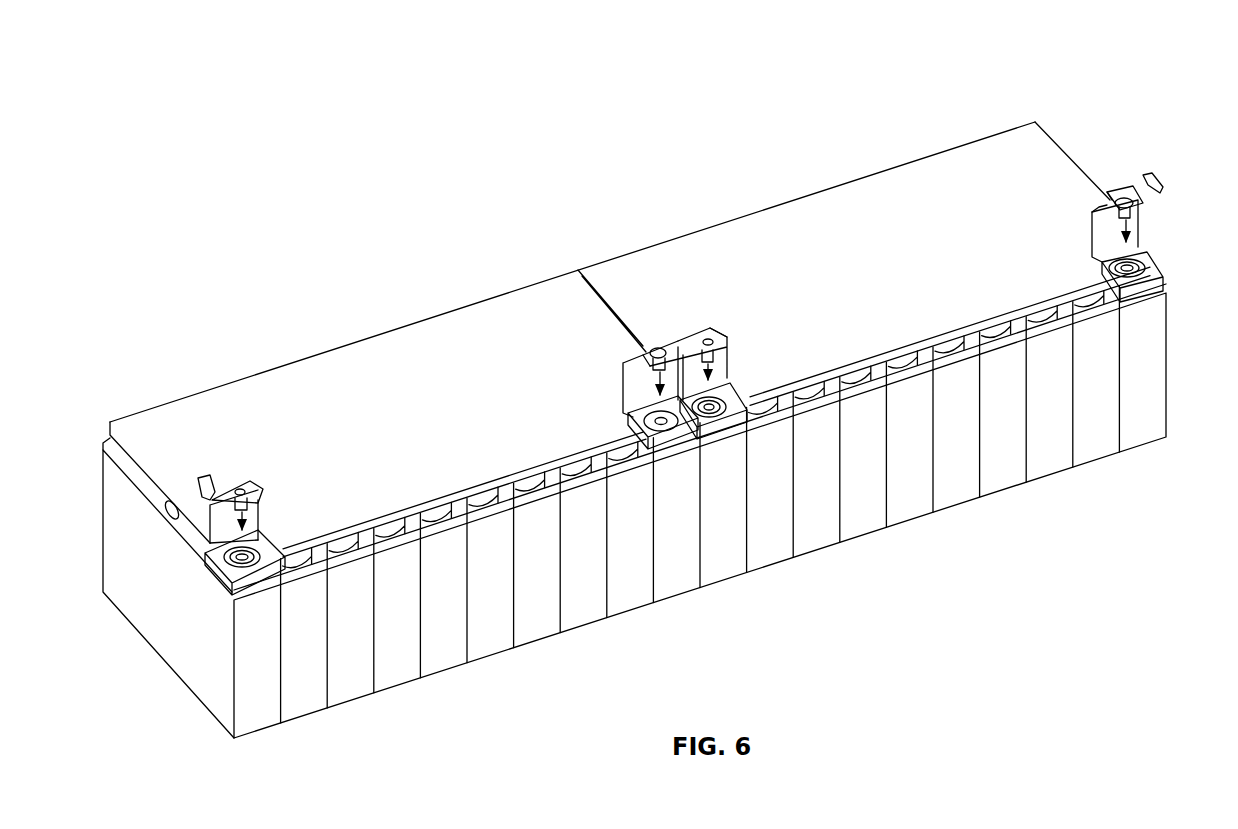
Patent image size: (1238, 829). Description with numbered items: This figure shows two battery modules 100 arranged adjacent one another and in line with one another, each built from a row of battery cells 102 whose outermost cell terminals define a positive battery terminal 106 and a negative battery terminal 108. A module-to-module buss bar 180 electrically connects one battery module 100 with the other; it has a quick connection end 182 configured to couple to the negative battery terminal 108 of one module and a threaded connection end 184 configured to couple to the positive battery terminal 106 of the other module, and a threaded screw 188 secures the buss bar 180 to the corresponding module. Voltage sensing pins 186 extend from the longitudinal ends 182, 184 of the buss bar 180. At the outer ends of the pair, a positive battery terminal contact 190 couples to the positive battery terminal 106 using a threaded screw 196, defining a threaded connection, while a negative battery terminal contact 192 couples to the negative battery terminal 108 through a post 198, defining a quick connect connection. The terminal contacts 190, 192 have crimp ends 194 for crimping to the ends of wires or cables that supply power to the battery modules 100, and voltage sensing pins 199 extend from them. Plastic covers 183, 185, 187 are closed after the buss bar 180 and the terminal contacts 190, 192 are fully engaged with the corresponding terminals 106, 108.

The battery module 100 is at (330, 312).
The battery cell 102 is at (580, 607).
The positive battery terminal 106 is at (1150, 268).
The negative battery terminal 108 is at (233, 545).
The module-to-module buss bar 180 is at (688, 345).
The quick connection end 182 is at (715, 322).
The plastic cover 183 is at (1098, 240).
The threaded connection end 184 is at (628, 355).
The plastic cover 185 is at (640, 390).
The voltage sensing pin 186 is at (728, 335).
The plastic cover 187 is at (220, 523).
The threaded screw 188 is at (655, 350).
The positive battery terminal contact 190 is at (1128, 173).
The negative battery terminal contact 192 is at (232, 482).
The crimp end 194 is at (205, 497).
The threaded screw 196 is at (1116, 198).
The post 198 is at (262, 508).
The voltage sensing pin 199 is at (258, 484).